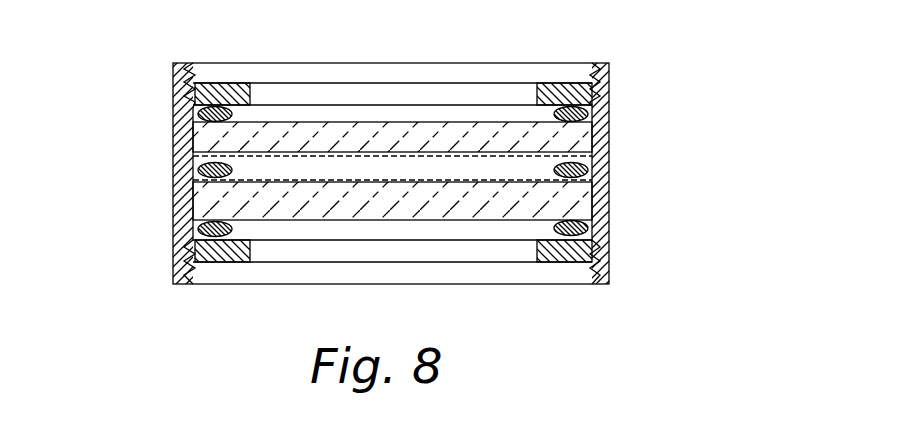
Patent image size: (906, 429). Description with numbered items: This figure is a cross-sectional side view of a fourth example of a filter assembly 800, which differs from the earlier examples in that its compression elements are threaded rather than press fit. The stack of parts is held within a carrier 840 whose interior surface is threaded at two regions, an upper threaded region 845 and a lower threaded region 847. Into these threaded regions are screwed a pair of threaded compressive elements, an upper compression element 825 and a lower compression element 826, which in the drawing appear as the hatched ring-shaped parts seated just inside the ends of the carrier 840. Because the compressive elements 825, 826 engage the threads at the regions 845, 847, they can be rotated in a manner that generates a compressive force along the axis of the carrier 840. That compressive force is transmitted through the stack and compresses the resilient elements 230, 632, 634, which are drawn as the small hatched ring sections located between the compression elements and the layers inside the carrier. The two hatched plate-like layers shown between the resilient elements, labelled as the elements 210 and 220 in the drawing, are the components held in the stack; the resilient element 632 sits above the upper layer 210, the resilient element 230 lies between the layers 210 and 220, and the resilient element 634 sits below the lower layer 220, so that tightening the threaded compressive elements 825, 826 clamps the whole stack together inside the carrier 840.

The filter assembly 800 is at (664, 72).
The carrier 840 is at (612, 147).
The threaded region 845 is at (193, 84).
The compression element 825 is at (552, 83).
The threaded region 847 is at (190, 265).
The compression element 826 is at (555, 262).
The first filter element 210 is at (200, 138).
The second filter element 220 is at (200, 202).
The resilient element 632 is at (200, 113).
The resilient element 230 is at (200, 168).
The resilient element 634 is at (200, 230).